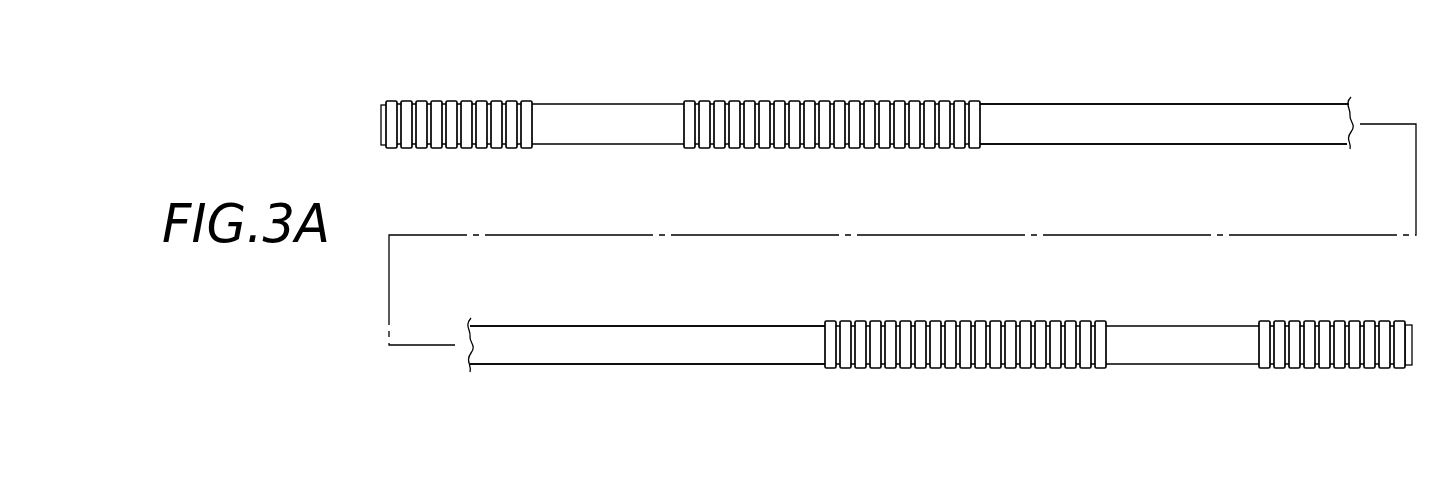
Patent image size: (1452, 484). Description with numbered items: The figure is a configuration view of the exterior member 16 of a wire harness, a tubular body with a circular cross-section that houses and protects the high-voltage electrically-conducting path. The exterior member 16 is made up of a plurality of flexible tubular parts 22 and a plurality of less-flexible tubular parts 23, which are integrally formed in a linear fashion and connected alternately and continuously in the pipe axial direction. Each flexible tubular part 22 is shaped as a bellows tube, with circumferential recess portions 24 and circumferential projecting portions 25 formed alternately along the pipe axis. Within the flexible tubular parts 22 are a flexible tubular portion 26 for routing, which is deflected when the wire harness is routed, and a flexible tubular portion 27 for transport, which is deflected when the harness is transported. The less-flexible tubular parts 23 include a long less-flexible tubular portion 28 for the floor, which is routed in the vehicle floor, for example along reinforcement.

The exterior member 16 is at (1209, 70).
The flexible tubular part 22 is at (895, 233).
The less-flexible tubular part 23 is at (896, 232).
The circumferential recess portion 24 is at (518, 149).
The circumferential projecting portion 25 is at (528, 149).
The flexible tubular portion for routing 26 is at (437, 149).
The flexible tubular portion for transport 27 is at (882, 149).
The less-flexible tubular portion for the floor 28 is at (1258, 146).